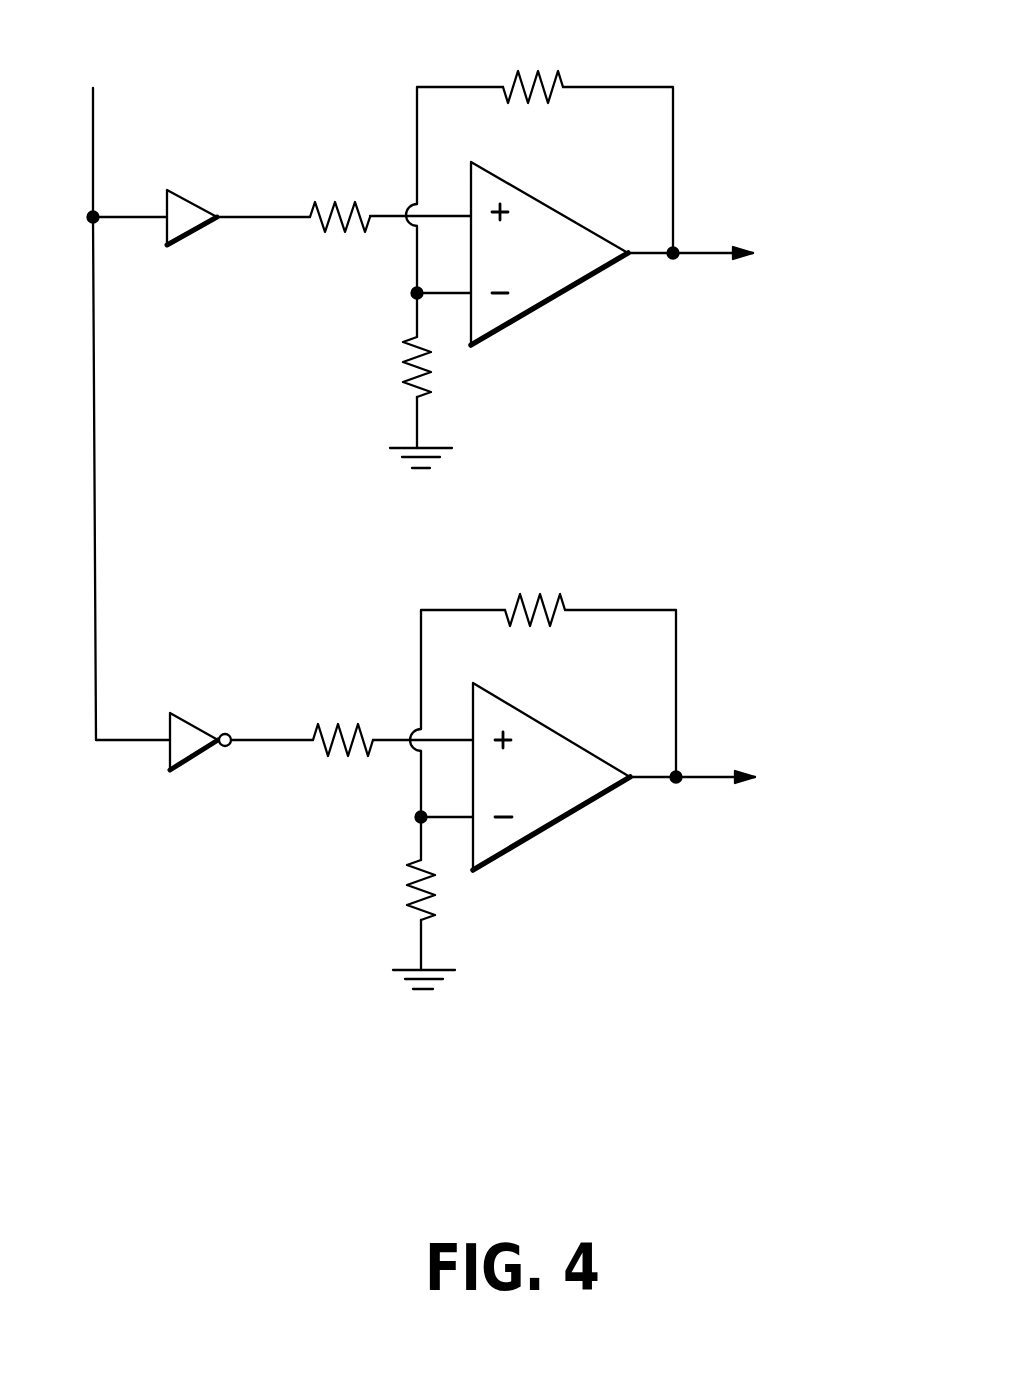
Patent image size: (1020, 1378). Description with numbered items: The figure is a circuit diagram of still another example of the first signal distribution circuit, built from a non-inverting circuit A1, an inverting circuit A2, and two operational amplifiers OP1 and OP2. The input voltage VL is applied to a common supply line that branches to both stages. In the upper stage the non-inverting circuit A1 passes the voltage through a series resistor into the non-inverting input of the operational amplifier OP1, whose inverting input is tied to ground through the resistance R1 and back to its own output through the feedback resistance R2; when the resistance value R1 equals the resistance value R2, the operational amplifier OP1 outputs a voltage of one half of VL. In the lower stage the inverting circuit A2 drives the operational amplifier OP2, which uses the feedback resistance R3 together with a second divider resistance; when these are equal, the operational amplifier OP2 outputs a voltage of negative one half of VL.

The input voltage VL is at (121, 391).
The non-inverting circuit A1 is at (197, 197).
The inverting circuit A2 is at (199, 719).
The resistance value R1 is at (410, 378).
The resistance value R2 is at (518, 508).
The resistance value R3 is at (543, 685).
The operational amplifier OP1 is at (558, 302).
The operational amplifier OP2 is at (563, 825).